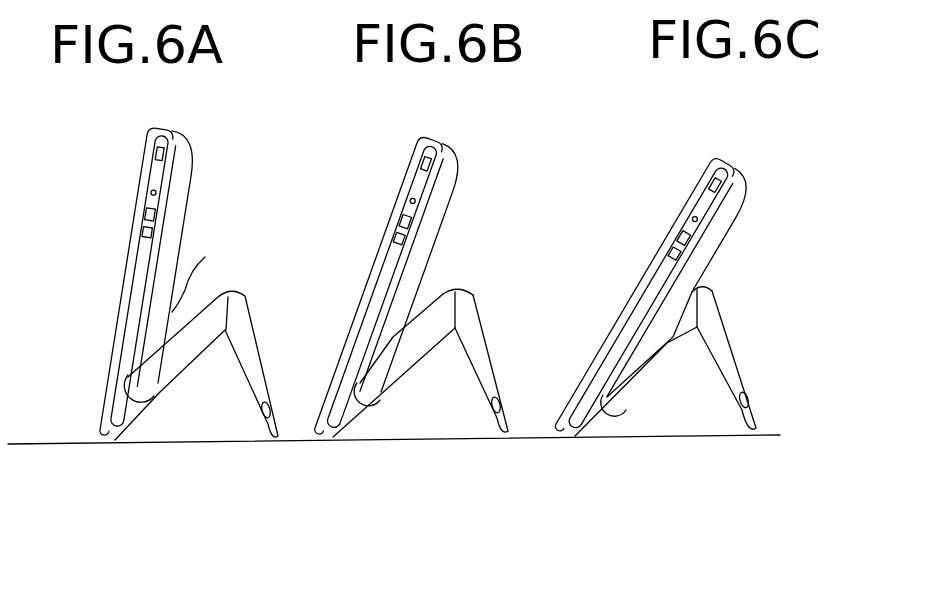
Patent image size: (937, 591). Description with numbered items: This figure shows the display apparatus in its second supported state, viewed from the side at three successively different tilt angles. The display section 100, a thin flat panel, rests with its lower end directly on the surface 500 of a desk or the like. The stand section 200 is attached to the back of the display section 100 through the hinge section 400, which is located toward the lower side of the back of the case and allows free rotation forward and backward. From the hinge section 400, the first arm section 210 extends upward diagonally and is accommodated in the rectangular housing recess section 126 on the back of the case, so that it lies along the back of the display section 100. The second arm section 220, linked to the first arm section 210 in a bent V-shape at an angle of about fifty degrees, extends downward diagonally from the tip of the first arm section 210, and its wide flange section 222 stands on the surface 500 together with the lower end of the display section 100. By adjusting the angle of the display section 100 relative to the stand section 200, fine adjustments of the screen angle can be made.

In FIG. 6A, the display section 100 is at (194, 189).
In FIG. 6B, the display section 100 is at (453, 209).
In FIG. 6C, the display section 100 is at (741, 204).
In FIG. 6A, the housing recess section 126 is at (205, 257).
In FIG. 6A, the stand section 200 is at (262, 311).
In FIG. 6B, the stand section 200 is at (461, 428).
In FIG. 6C, the stand section 200 is at (729, 393).
In FIG. 6B, the first arm section 210 is at (417, 368).
In FIG. 6C, the first arm section 210 is at (673, 367).
In FIG. 6B, the second arm section 220 is at (468, 382).
In FIG. 6C, the second arm section 220 is at (722, 342).
In FIG. 6C, the flange section 222 is at (757, 418).
In FIG. 6A, the hinge section 400 is at (145, 383).
In FIG. 6A, the surface 500 is at (42, 443).